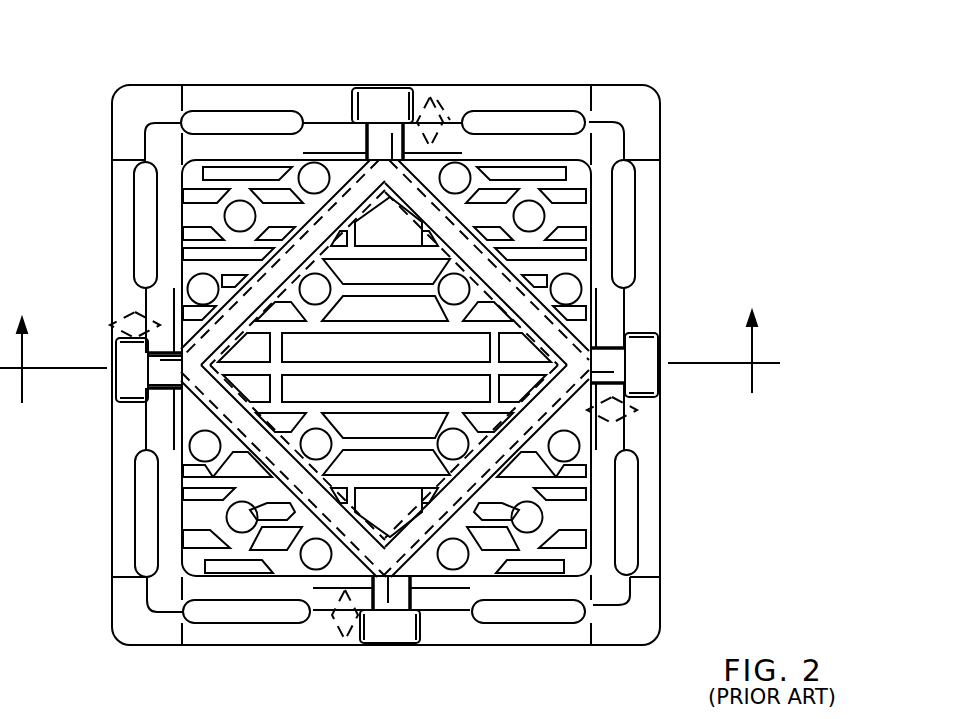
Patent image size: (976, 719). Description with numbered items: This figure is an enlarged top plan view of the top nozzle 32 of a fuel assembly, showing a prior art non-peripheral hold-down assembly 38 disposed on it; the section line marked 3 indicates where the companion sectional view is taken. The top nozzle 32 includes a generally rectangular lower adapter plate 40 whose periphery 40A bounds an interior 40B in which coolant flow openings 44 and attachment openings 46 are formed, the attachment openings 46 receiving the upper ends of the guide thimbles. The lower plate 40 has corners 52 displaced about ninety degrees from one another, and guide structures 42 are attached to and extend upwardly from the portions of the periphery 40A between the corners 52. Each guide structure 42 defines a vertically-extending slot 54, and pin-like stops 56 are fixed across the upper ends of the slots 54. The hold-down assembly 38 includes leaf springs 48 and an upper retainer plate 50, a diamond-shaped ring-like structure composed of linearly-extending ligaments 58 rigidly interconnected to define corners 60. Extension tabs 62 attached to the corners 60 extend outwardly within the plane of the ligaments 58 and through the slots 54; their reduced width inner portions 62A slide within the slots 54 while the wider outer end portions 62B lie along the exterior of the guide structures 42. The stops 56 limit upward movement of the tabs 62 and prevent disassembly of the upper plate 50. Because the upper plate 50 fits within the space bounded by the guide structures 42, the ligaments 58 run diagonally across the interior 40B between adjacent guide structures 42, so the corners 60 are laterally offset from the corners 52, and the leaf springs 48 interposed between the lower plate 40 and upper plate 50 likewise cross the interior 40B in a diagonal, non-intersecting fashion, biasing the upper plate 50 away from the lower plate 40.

The top nozzle 32 is at (688, 168).
The non-peripheral hold-down assembly 38 is at (122, 105).
The lower adapter plate 40 is at (660, 540).
The periphery of the lower plate 40A is at (660, 588).
The interior of the lower plate 40B is at (560, 577).
The guide structures 42 is at (326, 138).
The coolant flow openings 44 is at (542, 185).
The attachment openings 46 is at (226, 214).
The leaf springs 48 is at (292, 185).
The upper retainer plate 50 is at (598, 295).
The corners of the lower adapter plate 52 is at (128, 106).
The slots 54 is at (382, 143).
The stops 56 is at (398, 95).
The ligaments 58 is at (230, 260).
The corners of the upper plate 60 is at (357, 110).
The extension tabs 62 is at (443, 118).
The inner portions of the extension tabs 62A is at (273, 390).
The outer end portions of the extension tabs 62B is at (128, 360).
The section line 3- 3 is at (390, 357).